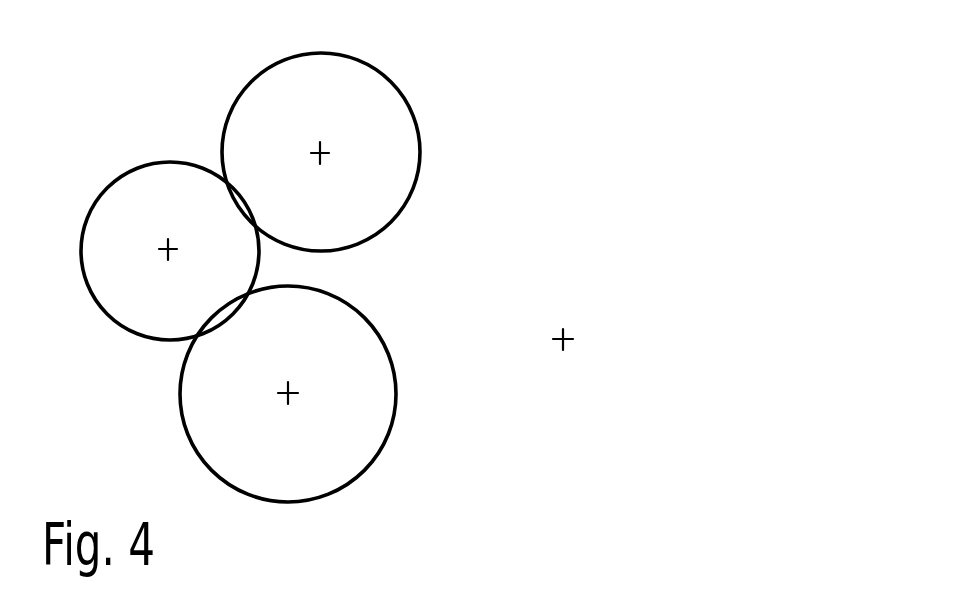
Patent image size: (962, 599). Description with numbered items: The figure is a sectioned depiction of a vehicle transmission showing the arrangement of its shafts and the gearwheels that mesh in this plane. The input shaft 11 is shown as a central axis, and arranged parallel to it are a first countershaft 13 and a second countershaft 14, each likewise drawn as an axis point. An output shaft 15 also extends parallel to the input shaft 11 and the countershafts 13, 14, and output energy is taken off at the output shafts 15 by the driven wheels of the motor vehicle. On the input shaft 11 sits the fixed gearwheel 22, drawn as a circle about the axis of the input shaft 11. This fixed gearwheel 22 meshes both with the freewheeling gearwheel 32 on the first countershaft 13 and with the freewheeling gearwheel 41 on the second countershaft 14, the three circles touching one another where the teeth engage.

The input shaft 11 is at (165, 245).
The first countershaft 13 is at (325, 148).
The second countershaft 14 is at (293, 388).
The output shaft 15 is at (568, 335).
The fixed gearwheel 22 is at (103, 212).
The freewheeling gearwheel 32 is at (328, 68).
The freewheeling gearwheel 41 is at (305, 467).